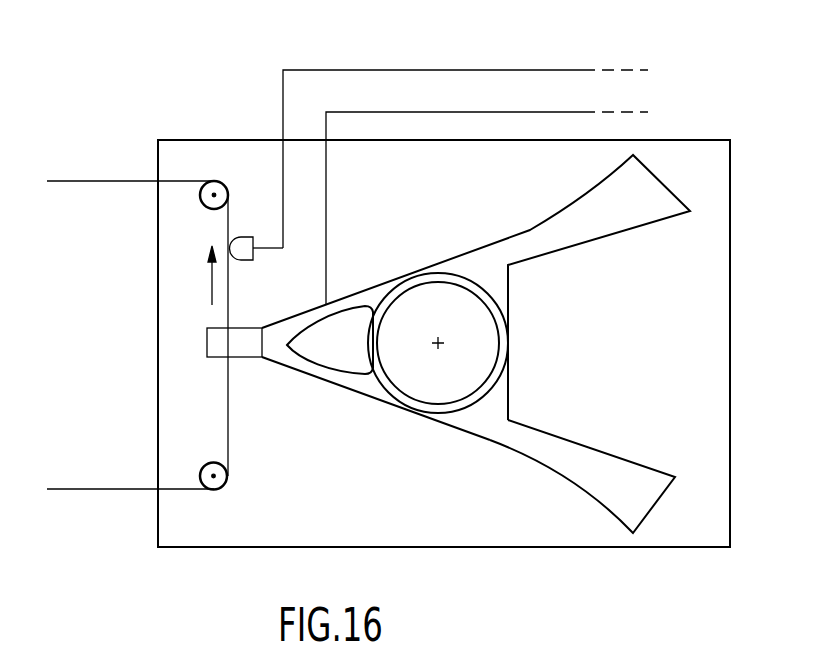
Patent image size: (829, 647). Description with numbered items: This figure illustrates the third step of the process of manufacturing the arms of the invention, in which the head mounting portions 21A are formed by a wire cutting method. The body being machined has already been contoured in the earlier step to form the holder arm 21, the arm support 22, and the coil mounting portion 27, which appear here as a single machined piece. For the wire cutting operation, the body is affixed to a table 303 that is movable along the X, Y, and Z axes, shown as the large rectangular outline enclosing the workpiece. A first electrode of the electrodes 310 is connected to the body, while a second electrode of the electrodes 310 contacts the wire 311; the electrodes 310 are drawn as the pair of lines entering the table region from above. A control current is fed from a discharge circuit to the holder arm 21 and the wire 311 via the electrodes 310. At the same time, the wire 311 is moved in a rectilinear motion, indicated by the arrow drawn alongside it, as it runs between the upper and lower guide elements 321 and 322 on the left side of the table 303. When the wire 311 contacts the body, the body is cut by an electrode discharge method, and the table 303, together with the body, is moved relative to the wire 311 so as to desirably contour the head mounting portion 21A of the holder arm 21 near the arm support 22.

The table 303 is at (578, 547).
The electrodes 310 is at (465, 119).
The wire 311 is at (125, 180).
The upper guide roller 321 is at (210, 200).
The lower guide roller 322 is at (207, 468).
The holder arm 21 is at (346, 296).
The head mounting portion 21A is at (250, 350).
The arm support 22 is at (408, 398).
The coil mounting portion 27 is at (603, 463).